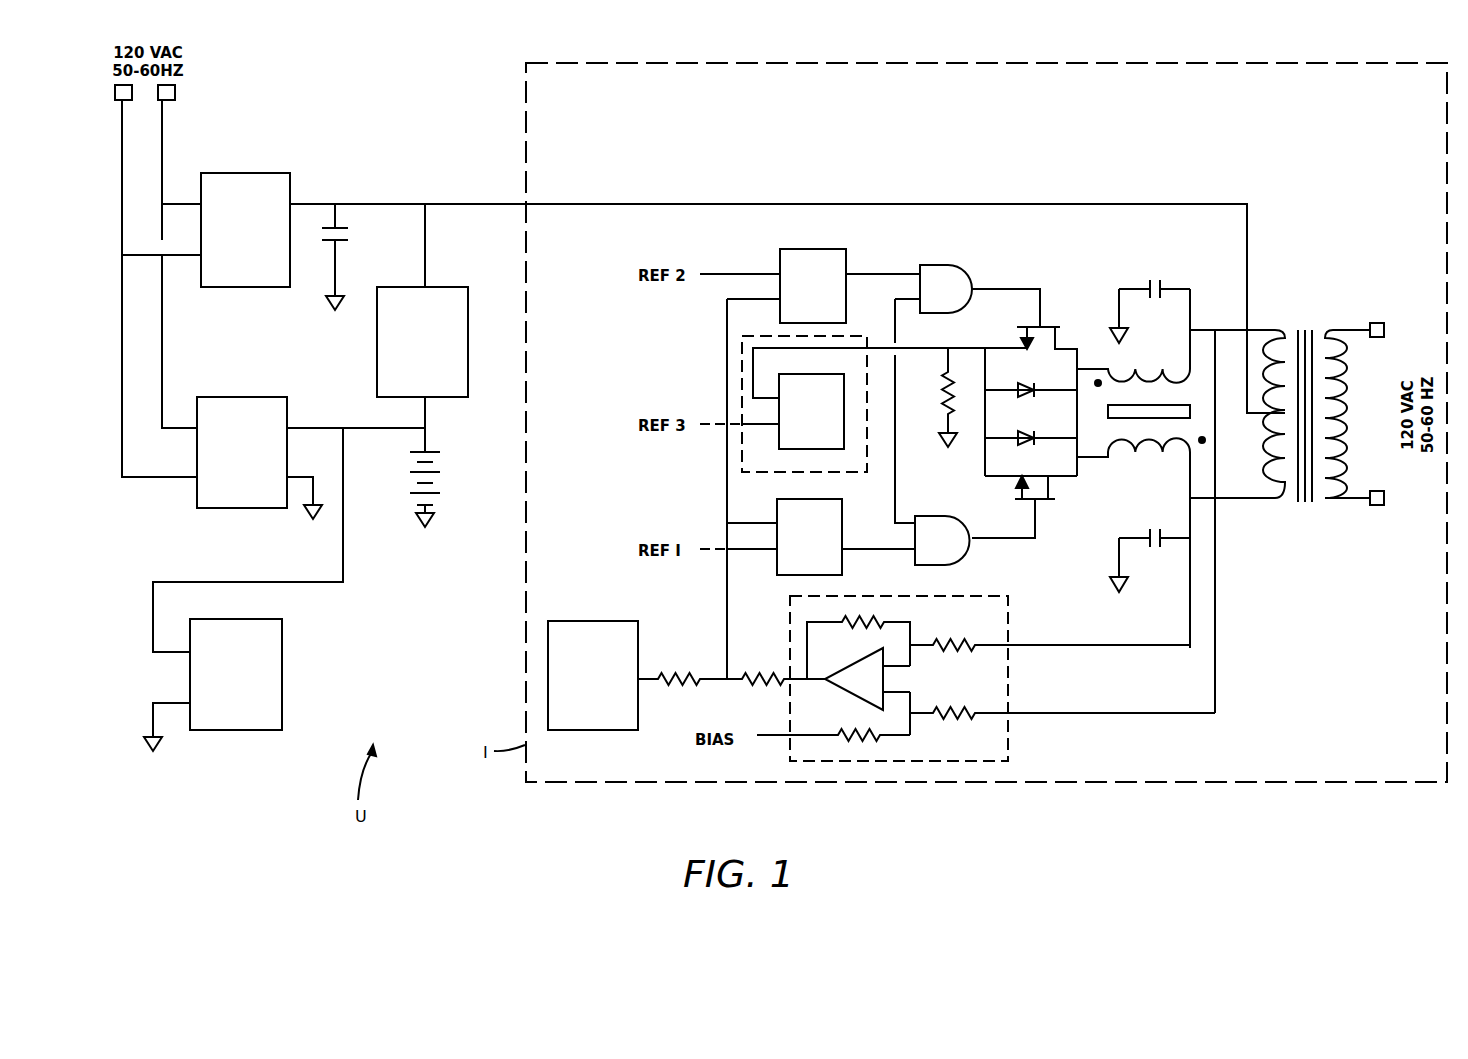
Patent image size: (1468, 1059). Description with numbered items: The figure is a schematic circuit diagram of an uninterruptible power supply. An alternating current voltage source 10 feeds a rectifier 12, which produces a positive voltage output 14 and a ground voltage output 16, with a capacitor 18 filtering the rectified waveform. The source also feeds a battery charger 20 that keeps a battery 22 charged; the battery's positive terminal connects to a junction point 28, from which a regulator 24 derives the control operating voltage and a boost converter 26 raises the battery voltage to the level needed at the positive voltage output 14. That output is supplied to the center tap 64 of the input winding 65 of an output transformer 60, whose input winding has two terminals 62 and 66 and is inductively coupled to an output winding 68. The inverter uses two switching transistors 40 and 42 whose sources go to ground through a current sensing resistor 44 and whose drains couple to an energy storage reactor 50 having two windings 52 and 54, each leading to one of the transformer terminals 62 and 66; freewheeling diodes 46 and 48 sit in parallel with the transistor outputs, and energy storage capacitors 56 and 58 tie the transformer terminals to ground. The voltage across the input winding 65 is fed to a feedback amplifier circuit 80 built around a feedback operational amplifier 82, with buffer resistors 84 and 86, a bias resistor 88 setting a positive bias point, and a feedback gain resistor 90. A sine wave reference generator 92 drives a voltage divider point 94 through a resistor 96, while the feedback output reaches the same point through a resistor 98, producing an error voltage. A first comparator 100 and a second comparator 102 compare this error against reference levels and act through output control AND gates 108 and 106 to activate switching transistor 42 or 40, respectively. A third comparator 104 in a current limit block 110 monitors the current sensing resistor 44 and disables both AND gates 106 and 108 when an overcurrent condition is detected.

The alternating current voltage source 10 is at (158, 100).
The rectifier 12 is at (290, 182).
The positive voltage output 14 is at (360, 204).
The ground voltage output 16 is at (325, 306).
The capacitor 18 is at (340, 238).
The battery charger 20 is at (287, 406).
The battery 22 is at (440, 478).
The regulator 24 is at (282, 628).
The boost converter 26 is at (468, 314).
The junction point 28 is at (428, 433).
The switching transistor 40 is at (1045, 331).
The switching transistor 42 is at (1040, 502).
The current sensing resistor 44 is at (948, 395).
The diode 46 is at (1028, 388).
The diode 48 is at (1028, 436).
The energy storage reactor 50 is at (1128, 472).
The winding 52 is at (1138, 374).
The winding 54 is at (1150, 450).
The energy storage capacitor 56 is at (1163, 293).
The energy storage capacitor 58 is at (1165, 546).
The output transformer 60 is at (1323, 332).
The input terminal 62 is at (1262, 330).
The center tap 64 is at (1275, 416).
The input winding 65 is at (1297, 502).
The input terminal 66 is at (1249, 498).
The output winding 68 is at (1380, 505).
The feedback amplifier circuit 80 is at (980, 598).
The feedback operational amplifier 82 is at (848, 668).
The resistor 84 is at (944, 652).
The resistor 86 is at (944, 718).
The bias resistor 88 is at (856, 728).
The feedback gain resistor 90 is at (860, 628).
The sine wave reference generator 92 is at (590, 621).
The voltage divider point 94 is at (727, 679).
The resistor 96 is at (670, 672).
The resistor 98 is at (757, 660).
The first comparator 100 is at (806, 486).
The second comparator 102 is at (797, 250).
The third comparator 104 is at (799, 376).
The output control AND gate 106 is at (968, 283).
The output control AND gate 108 is at (968, 554).
The current limit block 110 is at (852, 340).